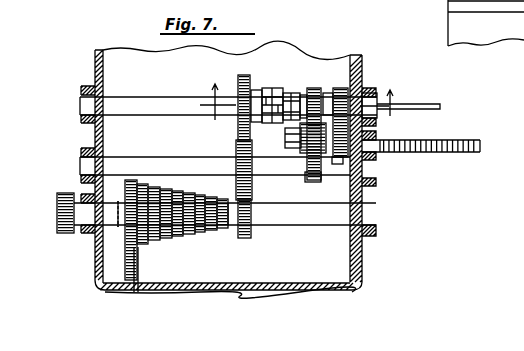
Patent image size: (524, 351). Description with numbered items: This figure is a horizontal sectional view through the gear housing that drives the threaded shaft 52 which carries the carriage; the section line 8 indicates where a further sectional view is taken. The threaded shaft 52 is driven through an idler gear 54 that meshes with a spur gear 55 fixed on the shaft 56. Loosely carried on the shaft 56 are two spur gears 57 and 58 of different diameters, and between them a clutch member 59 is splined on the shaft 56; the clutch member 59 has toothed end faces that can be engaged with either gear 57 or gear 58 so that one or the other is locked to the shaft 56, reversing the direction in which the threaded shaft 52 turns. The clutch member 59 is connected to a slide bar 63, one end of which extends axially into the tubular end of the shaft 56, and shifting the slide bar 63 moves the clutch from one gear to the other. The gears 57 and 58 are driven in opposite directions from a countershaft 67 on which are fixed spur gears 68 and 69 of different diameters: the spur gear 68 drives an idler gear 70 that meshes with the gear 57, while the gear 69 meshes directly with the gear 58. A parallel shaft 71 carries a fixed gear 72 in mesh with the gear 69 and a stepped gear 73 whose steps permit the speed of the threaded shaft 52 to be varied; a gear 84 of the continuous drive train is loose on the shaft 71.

The section line 8- 8 is at (294, 102).
The threaded shaft 52 is at (479, 143).
The idler gear 54 is at (351, 100).
The spur gear 55 is at (342, 88).
The shaft 56 is at (143, 93).
The spur gear 57 is at (311, 88).
The spur gear 58 is at (240, 76).
The clutch member 59 is at (272, 90).
The slide bar 63 is at (438, 107).
The countershaft 67 is at (166, 157).
The spur gear 68 is at (306, 179).
The spur gear 69 is at (236, 184).
The idler gear 70 is at (285, 140).
The shaft 71 is at (314, 218).
The gear 72 is at (245, 236).
The stepped gear 73 is at (190, 240).
The gear 84 is at (62, 193).